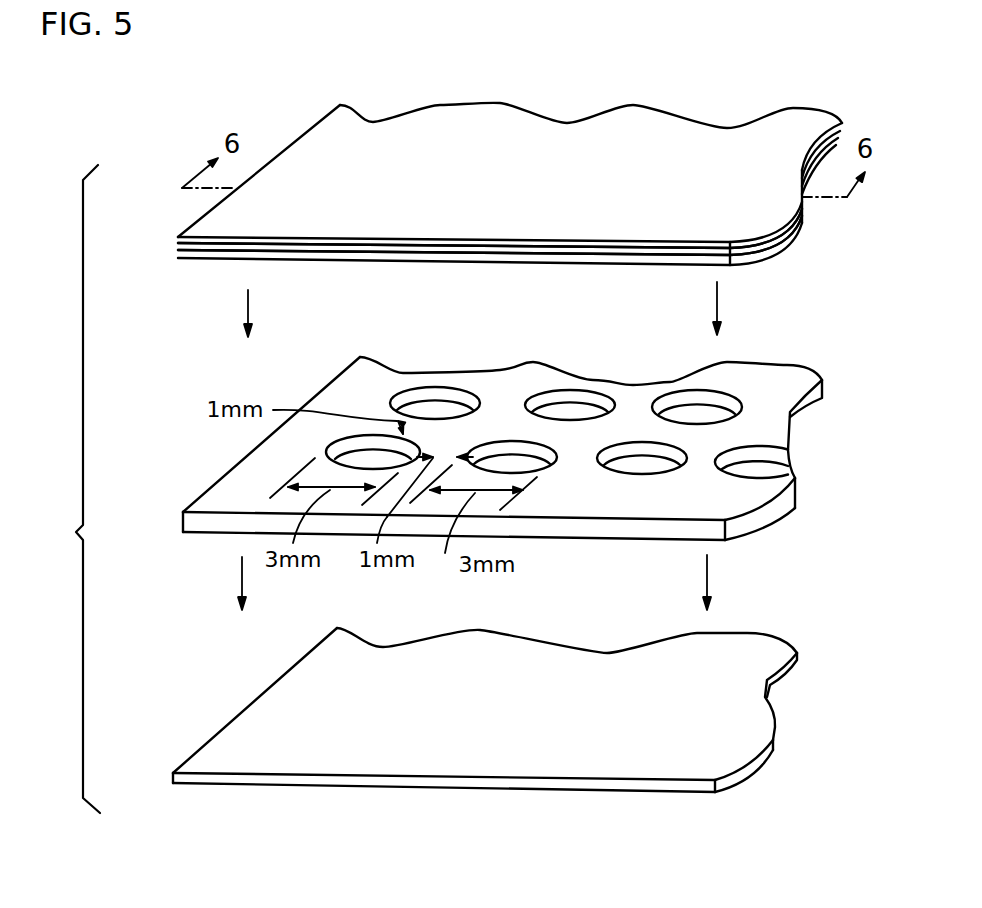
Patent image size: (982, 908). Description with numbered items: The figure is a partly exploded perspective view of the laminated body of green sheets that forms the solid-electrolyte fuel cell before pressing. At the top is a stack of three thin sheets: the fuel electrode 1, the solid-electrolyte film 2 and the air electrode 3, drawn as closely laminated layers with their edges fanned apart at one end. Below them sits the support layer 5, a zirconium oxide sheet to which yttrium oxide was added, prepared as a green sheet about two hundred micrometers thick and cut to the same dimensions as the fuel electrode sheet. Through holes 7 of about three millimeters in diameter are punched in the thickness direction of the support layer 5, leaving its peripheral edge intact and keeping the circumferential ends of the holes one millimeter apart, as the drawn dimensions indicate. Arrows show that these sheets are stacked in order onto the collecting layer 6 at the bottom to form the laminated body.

The fuel electrode 1 is at (178, 238).
The solid-electrolyte film 2 is at (178, 246).
The air electrode 3 is at (178, 256).
The support layer 5 is at (188, 527).
The collecting layer 6 is at (173, 773).
The holes 7 is at (510, 448).